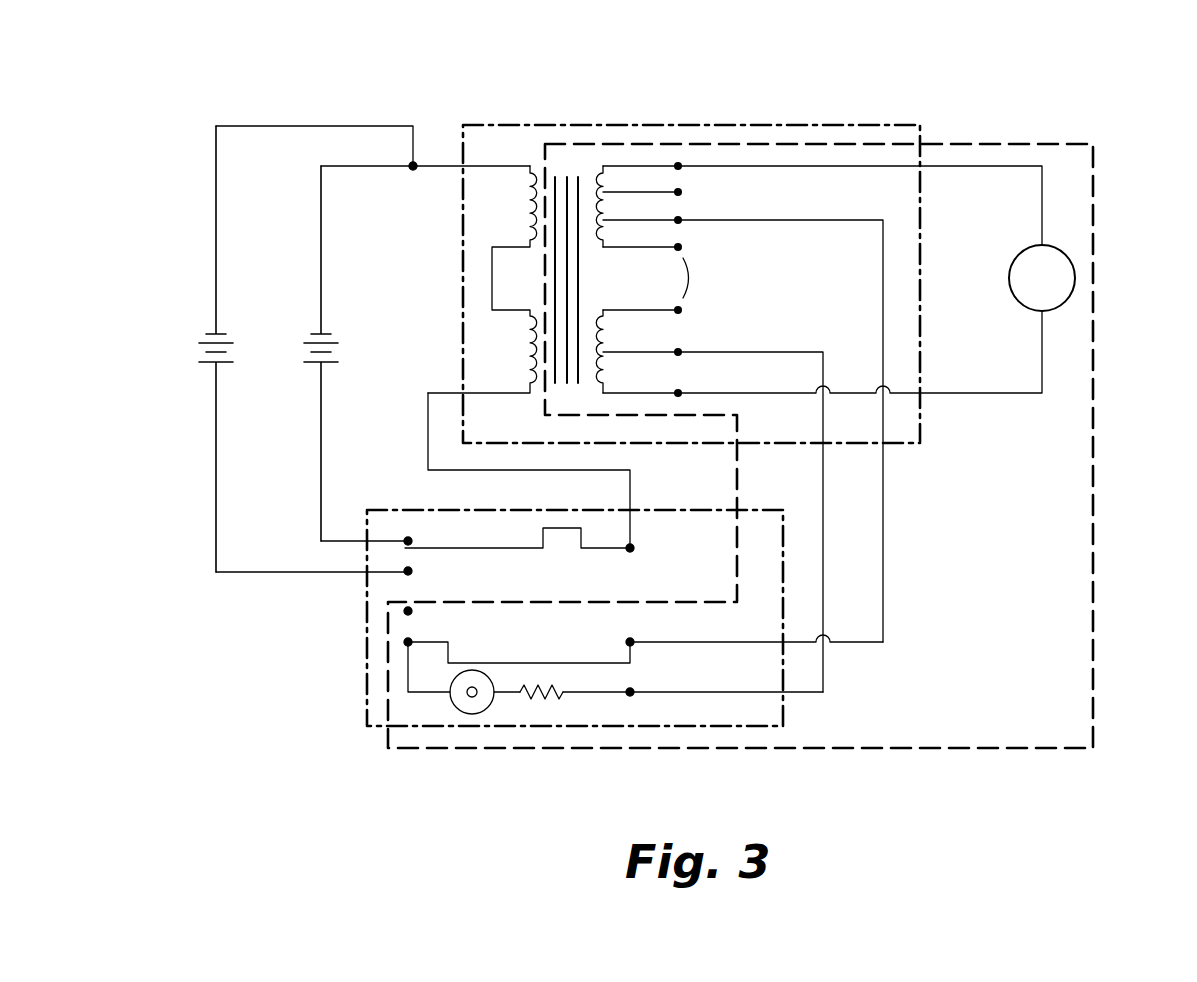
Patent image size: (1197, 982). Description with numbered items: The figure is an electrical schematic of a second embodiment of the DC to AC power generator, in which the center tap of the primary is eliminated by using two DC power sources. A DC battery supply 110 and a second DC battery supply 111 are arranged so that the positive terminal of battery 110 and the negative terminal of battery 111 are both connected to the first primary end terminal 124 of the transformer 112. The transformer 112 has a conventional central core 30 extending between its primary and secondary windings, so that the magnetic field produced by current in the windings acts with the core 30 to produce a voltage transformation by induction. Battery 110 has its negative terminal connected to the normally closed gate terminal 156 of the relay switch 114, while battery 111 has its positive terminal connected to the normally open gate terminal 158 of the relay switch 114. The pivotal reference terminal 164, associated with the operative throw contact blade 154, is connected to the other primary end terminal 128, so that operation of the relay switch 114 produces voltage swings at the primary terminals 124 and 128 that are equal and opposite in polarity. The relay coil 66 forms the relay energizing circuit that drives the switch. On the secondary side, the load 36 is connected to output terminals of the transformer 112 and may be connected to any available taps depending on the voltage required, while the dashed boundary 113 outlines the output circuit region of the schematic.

The transformer central core 30 is at (522, 220).
The load 36 is at (1009, 278).
The relay coil 66 is at (528, 712).
The DC battery supply 110 is at (318, 333).
The DC battery supply 111 is at (214, 333).
The transformer 112 is at (786, 150).
The output circuit 113 is at (1093, 450).
The relay switch 114 is at (367, 617).
The first primary end terminal 124 is at (410, 172).
The primary end terminal 128 is at (500, 393).
The operative throw contact blade 154 is at (512, 550).
The normally closed gate terminal 156 is at (412, 541).
The normally open gate terminal 158 is at (412, 571).
The pivotal reference terminal 164 is at (634, 548).